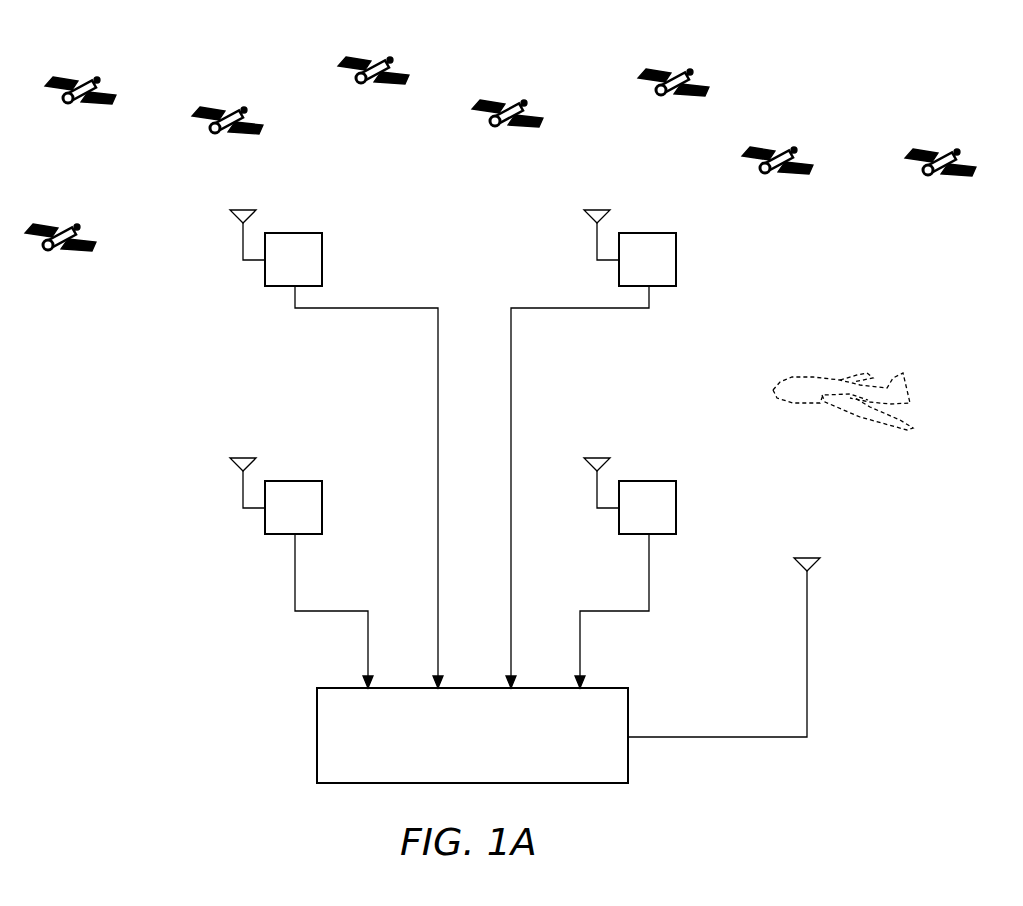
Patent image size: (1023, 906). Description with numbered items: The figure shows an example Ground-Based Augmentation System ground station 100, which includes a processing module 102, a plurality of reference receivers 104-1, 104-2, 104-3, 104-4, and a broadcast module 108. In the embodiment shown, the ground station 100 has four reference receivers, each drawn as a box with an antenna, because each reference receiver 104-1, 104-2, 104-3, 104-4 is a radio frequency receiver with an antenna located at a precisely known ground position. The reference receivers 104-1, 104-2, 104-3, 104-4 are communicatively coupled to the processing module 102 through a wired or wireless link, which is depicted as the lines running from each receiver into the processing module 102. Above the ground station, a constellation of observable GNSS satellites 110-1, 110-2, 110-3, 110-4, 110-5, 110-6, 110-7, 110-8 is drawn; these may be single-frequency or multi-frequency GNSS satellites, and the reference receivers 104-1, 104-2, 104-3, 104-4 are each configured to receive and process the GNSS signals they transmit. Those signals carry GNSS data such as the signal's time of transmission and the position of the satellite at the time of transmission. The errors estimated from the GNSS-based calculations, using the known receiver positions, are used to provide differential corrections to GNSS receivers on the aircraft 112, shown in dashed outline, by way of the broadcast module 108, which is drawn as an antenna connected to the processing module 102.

The GBAS ground station 100 is at (103, 443).
The processing module 102 is at (456, 760).
The reference receiver 104-1 is at (282, 482).
The reference receiver 104-2 is at (283, 233).
The reference receiver 104-3 is at (632, 233).
The reference receiver 104-4 is at (630, 482).
The broadcast module 108 is at (810, 557).
The GNSS satellite 110-1 is at (68, 230).
The GNSS satellite 110-2 is at (88, 83).
The GNSS satellite 110-3 is at (235, 113).
The GNSS satellite 110-4 is at (382, 64).
The GNSS satellite 110-5 is at (515, 107).
The GNSS satellite 110-6 is at (683, 76).
The GNSS satellite 110-7 is at (787, 153).
The GNSS satellite 110-8 is at (950, 155).
The aircraft 112 is at (807, 377).